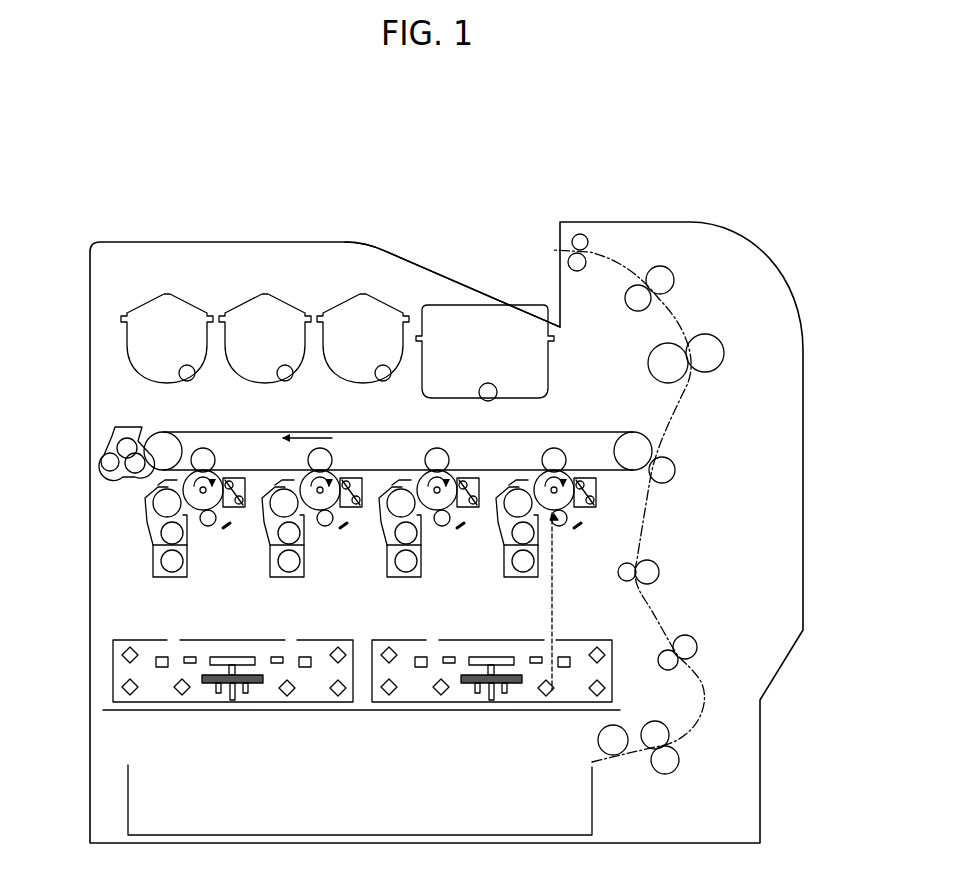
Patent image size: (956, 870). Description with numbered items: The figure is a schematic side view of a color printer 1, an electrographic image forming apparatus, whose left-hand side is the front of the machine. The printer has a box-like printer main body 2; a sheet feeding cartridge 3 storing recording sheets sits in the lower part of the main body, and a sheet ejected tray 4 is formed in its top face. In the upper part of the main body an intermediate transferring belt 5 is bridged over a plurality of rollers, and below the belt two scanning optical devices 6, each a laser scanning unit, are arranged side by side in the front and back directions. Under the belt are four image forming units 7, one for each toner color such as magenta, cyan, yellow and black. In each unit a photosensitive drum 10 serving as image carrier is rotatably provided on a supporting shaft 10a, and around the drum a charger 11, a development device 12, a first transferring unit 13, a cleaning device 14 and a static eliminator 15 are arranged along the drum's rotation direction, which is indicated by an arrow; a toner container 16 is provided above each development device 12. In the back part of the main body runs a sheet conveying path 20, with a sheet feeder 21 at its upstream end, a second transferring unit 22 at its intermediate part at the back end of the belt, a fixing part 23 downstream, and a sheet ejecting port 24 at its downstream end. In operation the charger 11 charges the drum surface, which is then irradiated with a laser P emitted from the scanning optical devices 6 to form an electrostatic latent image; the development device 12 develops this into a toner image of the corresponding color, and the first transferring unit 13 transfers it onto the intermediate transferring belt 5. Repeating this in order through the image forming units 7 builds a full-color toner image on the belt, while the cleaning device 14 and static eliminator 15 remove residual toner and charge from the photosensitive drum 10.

The color printer 1 is at (124, 177).
The printer main body 2 is at (112, 242).
The sheet feeding cartridge 3 is at (128, 798).
The sheet ejected tray 4 is at (405, 257).
The intermediate transferring belt 5 is at (543, 432).
The scanning optical devices 6 is at (293, 702).
The image forming units 7 is at (398, 509).
The photosensitive drum 10 is at (539, 458).
The supporting shaft 10a is at (592, 521).
The charger 11 is at (575, 550).
The development device 12 is at (501, 491).
The first transferring unit 13 is at (576, 439).
The cleaning device 14 is at (629, 504).
The static eliminator 15 is at (589, 563).
The toner container 16 is at (170, 275).
The sheet conveying path 20 is at (628, 533).
The sheet feeder 21 is at (685, 756).
The second transferring unit 22 is at (676, 482).
The fixing part 23 is at (707, 375).
The sheet ejecting port 24 is at (553, 240).
The laser P is at (560, 601).